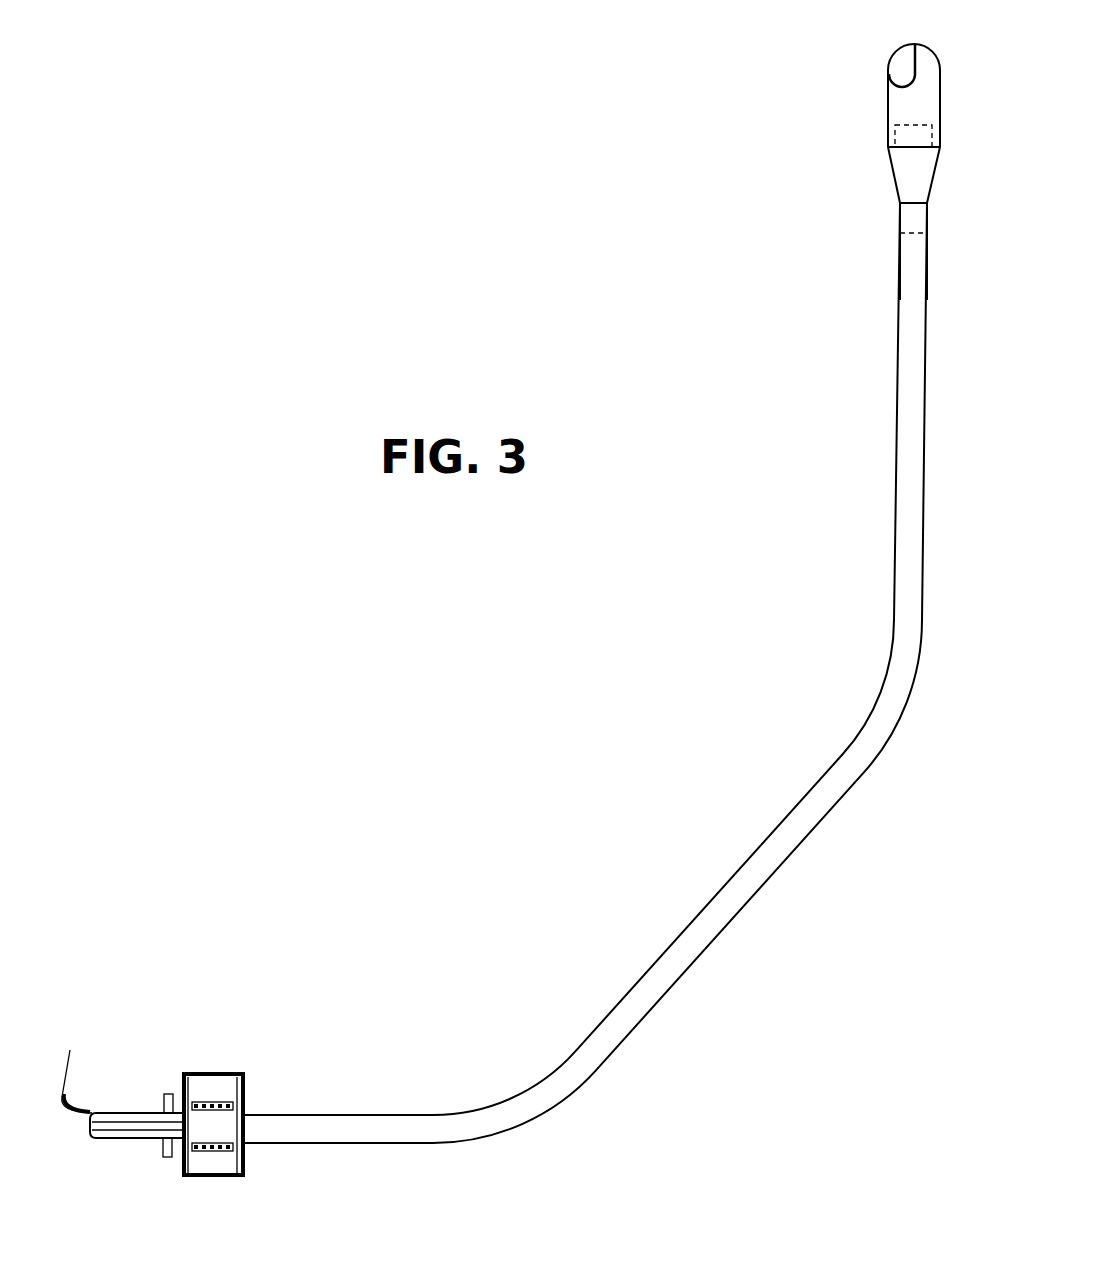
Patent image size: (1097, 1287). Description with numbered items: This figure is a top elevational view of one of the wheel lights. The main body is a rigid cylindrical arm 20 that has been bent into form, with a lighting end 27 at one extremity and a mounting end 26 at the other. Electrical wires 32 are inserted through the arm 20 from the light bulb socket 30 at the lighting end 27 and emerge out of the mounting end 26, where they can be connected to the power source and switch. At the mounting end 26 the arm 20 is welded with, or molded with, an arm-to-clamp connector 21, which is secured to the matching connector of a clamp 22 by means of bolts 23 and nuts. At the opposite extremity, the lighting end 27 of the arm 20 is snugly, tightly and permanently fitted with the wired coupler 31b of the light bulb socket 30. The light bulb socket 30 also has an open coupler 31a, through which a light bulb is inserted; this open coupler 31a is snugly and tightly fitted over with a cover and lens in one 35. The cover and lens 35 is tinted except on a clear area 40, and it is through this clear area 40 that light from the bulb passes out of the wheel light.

The cylindrical arm 20 is at (900, 510).
The arm-to-clamp connector 21 is at (150, 1125).
The clamp 22 is at (246, 1085).
The bolts 23 is at (209, 1145).
The mounting end 26 is at (112, 1140).
The lighting end 27 is at (896, 266).
The light bulb socket 30 is at (907, 181).
The open coupler 31a is at (898, 140).
The wired coupler 31b is at (908, 223).
The electrical wires 32 is at (72, 1068).
The cover and lens in one 35 is at (924, 54).
The clear area 40 is at (903, 66).